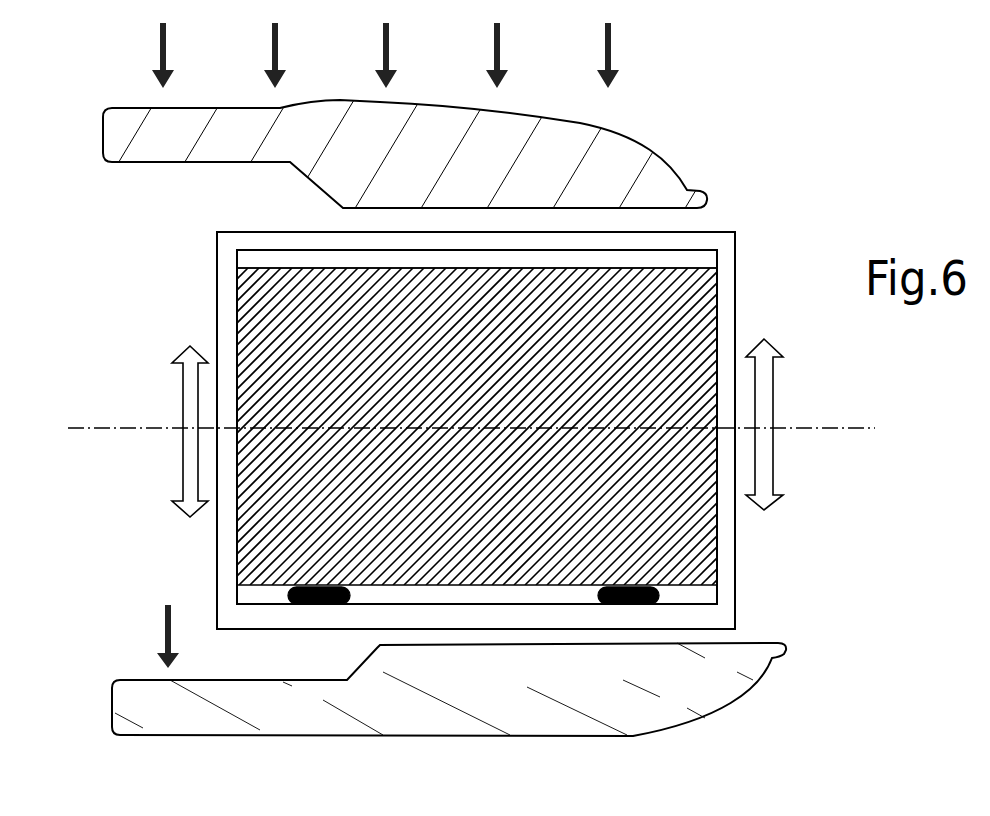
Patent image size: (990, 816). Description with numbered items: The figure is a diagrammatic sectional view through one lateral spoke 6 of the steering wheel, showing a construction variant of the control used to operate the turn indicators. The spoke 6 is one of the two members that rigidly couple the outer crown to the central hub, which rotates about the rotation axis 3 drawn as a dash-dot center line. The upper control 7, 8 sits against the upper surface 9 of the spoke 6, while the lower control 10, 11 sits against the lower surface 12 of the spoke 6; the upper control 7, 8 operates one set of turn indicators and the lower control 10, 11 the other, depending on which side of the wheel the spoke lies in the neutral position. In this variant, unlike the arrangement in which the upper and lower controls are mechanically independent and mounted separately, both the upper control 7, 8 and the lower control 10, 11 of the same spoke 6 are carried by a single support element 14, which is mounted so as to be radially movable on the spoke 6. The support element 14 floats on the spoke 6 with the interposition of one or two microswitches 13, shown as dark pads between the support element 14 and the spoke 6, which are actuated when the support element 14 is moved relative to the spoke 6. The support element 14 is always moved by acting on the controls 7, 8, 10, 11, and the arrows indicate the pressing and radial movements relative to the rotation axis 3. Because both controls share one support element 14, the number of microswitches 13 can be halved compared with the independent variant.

The rotation axis 3 is at (123, 428).
The lateral spoke 6 is at (278, 555).
The upper control 7 is at (421, 133).
The upper control 8 is at (450, 133).
The upper surface 9 is at (572, 266).
The lower control 10 is at (449, 717).
The lower control 11 is at (483, 702).
The lower surface 12 is at (378, 585).
The microswitch 13 is at (318, 604).
The support element 14 is at (720, 612).